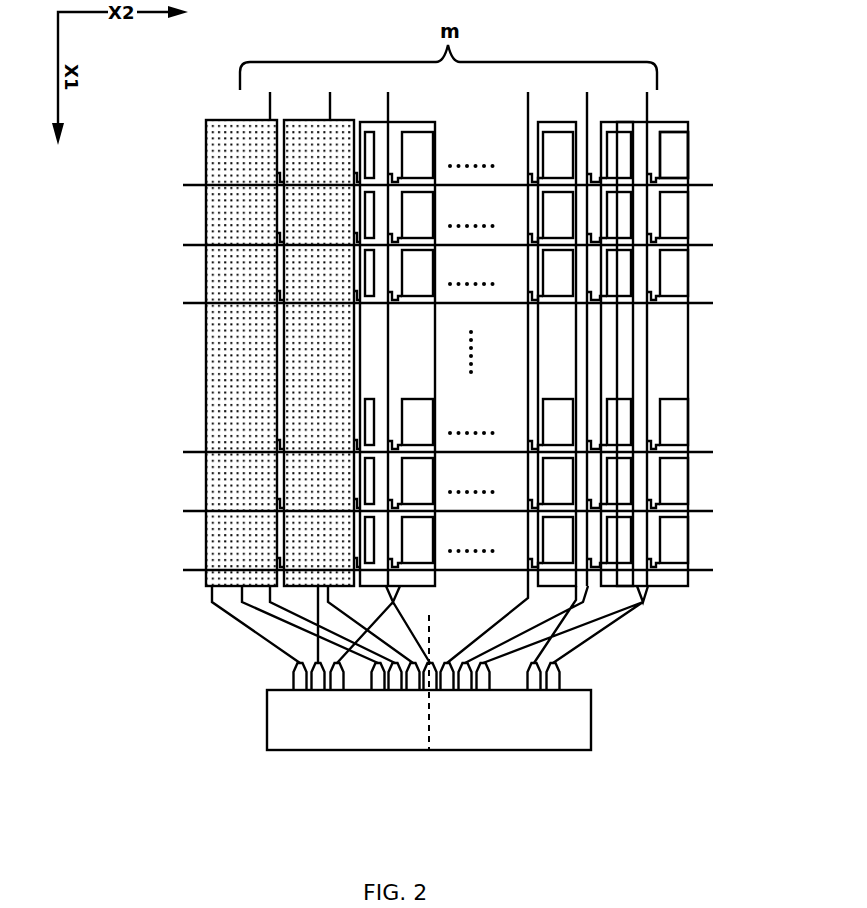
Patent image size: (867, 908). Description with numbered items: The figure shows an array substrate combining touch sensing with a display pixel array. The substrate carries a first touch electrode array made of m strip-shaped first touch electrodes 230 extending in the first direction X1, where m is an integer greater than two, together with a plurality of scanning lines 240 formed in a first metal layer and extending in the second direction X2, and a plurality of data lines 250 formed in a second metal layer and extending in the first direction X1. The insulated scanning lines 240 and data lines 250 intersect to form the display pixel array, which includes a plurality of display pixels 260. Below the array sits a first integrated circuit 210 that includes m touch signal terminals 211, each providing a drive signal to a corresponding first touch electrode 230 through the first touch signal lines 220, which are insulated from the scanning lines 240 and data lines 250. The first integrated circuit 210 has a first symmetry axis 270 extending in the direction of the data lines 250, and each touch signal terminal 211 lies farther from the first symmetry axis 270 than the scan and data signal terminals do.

The data line 250 is at (212, 120).
The scanning line 240 is at (189, 185).
The first touch electrode 230 is at (668, 122).
The display pixel 260 is at (678, 155).
The first touch signal line 220 is at (281, 649).
The touch signal terminal 211 is at (560, 682).
The first integrated circuit 210 is at (591, 710).
The first symmetry axis 270 is at (426, 742).